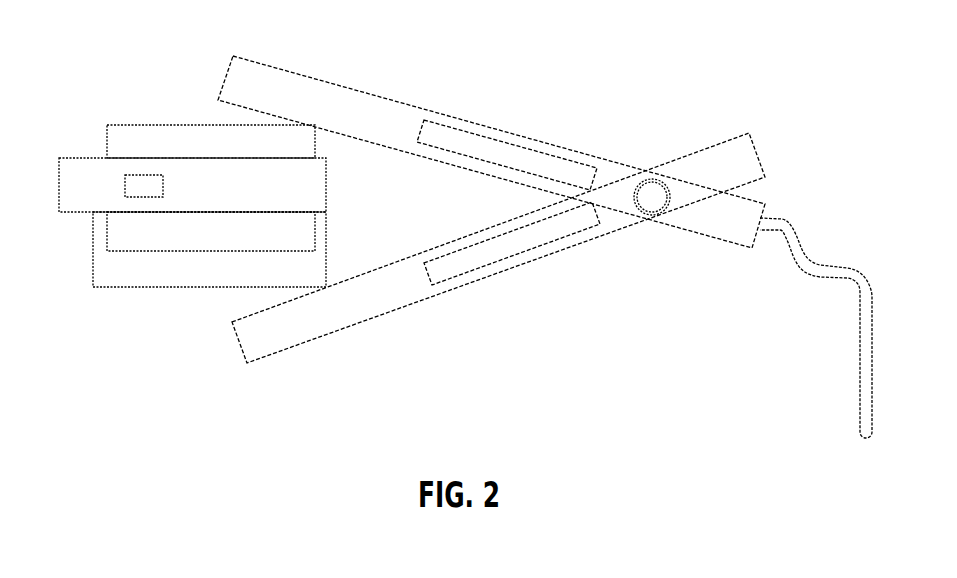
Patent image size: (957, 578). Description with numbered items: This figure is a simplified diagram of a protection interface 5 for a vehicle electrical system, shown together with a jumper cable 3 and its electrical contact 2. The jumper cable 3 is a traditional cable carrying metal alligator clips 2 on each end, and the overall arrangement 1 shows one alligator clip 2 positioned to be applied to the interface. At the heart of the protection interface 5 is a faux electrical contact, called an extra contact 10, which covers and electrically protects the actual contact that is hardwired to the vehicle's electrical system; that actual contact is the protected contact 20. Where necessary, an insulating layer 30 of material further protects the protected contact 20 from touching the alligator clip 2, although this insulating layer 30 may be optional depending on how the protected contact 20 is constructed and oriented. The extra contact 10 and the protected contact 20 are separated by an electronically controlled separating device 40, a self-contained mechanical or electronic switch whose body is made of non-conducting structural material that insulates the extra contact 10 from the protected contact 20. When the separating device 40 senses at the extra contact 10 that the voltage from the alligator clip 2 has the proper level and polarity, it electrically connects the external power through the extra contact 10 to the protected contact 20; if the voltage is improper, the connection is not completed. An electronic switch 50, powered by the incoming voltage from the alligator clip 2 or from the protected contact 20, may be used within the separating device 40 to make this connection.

The hair styling appliance 1 is at (779, 42).
The electrical contact 2 is at (553, 132).
The jumper cable 3 is at (832, 262).
The protection interface 5 is at (186, 86).
The extra contact 10 is at (167, 125).
The protected contact 20 is at (107, 231).
The insulating layer 30 is at (147, 287).
The separating device 40 is at (98, 158).
The electronic switch 50 is at (125, 185).